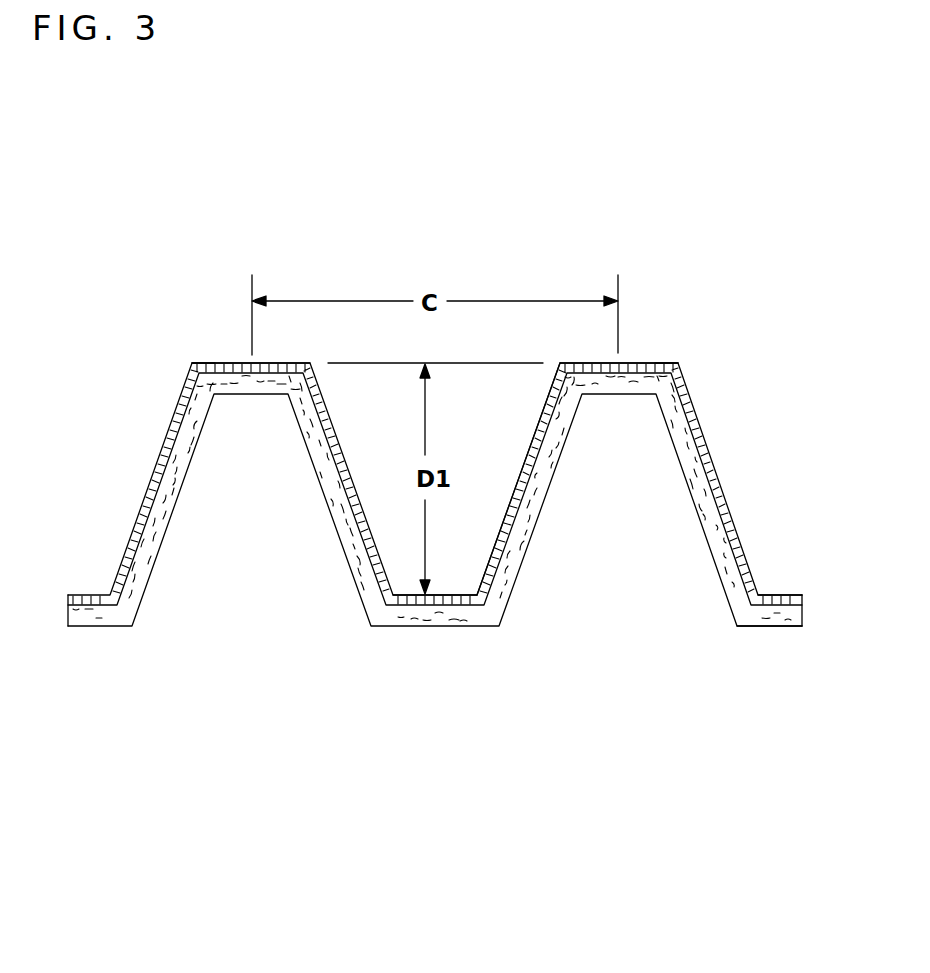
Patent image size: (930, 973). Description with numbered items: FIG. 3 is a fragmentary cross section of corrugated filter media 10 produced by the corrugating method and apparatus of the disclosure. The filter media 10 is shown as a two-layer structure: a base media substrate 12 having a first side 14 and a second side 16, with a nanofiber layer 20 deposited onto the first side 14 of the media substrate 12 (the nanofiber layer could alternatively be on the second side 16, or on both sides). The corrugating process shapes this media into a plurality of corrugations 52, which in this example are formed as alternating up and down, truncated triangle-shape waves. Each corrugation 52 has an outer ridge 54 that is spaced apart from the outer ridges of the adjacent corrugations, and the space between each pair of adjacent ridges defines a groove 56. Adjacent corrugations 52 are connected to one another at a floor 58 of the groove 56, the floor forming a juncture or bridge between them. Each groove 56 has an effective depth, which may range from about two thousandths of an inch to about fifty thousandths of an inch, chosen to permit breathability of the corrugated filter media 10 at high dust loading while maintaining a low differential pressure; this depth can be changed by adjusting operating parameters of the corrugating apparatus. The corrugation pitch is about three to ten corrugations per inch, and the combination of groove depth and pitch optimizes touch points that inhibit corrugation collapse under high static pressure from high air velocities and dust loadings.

The filter media 10 is at (707, 255).
The base media substrate 12 is at (722, 552).
The first side 14 is at (770, 597).
The second side 16 is at (767, 630).
The nanofiber layer 20 is at (735, 506).
The corrugations 52 is at (213, 346).
The outer ridge 54 is at (235, 363).
The groove 56 is at (495, 462).
The floor 58 is at (452, 572).